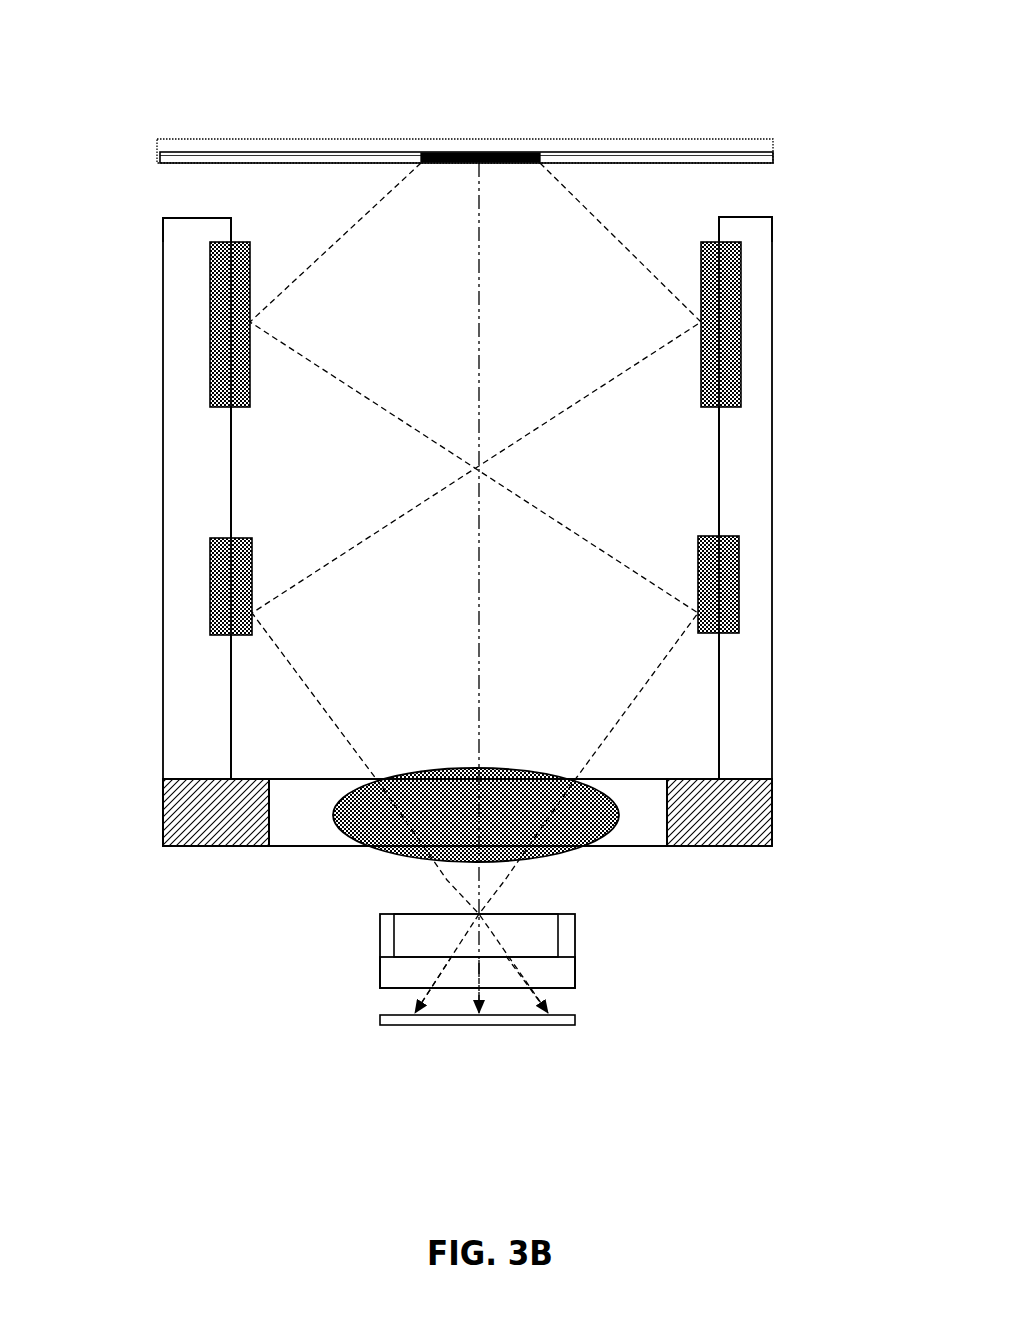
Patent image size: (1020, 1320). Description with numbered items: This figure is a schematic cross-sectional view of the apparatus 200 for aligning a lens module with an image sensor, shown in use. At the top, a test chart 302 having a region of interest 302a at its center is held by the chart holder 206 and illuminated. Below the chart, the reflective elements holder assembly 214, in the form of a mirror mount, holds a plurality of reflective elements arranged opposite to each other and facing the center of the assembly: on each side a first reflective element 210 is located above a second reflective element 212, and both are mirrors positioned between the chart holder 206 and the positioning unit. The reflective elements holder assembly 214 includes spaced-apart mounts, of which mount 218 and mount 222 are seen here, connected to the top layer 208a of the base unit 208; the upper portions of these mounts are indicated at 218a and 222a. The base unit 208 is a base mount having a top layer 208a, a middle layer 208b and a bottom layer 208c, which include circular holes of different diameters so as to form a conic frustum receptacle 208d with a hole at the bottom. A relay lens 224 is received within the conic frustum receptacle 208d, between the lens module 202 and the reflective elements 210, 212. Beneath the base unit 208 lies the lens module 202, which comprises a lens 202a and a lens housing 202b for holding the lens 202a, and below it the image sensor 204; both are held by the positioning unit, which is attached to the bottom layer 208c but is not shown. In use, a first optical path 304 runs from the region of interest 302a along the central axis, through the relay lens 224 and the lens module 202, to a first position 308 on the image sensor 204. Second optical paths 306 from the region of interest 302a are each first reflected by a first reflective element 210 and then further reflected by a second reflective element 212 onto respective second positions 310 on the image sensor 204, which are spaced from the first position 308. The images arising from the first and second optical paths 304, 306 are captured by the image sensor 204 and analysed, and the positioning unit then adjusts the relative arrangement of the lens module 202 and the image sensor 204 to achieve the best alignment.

The apparatus 200 is at (224, 116).
The lens module 202 is at (600, 919).
The lens 202a is at (510, 927).
The lens housing 202b is at (557, 968).
The image sensor 204 is at (567, 1020).
The chart holder 206 is at (692, 146).
The base unit 208 is at (142, 792).
The top layer 208a is at (235, 830).
The middle layer 208b is at (712, 825).
The bottom layer 208c is at (216, 812).
The conic frustum receptacle 208d is at (317, 825).
The first reflective element 210 is at (237, 275).
The second reflective element 212 is at (241, 556).
The reflective elements holder assembly 214 is at (150, 565).
The mount 218 is at (794, 208).
The second sidewall top portion 218a is at (758, 238).
The mount 222 is at (143, 211).
The first sidewall top portion 222a is at (197, 230).
The relay lens 224 is at (500, 793).
The test chart 302 is at (365, 152).
The region of interest 302a is at (482, 152).
The first optical path 304 is at (482, 377).
The second optical paths 306 is at (330, 248).
The first position 308 is at (477, 1026).
The second positions 310 is at (410, 1026).